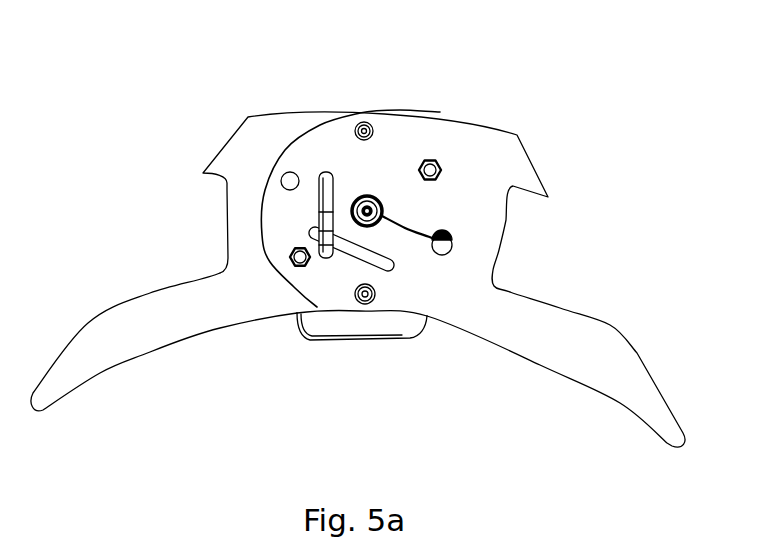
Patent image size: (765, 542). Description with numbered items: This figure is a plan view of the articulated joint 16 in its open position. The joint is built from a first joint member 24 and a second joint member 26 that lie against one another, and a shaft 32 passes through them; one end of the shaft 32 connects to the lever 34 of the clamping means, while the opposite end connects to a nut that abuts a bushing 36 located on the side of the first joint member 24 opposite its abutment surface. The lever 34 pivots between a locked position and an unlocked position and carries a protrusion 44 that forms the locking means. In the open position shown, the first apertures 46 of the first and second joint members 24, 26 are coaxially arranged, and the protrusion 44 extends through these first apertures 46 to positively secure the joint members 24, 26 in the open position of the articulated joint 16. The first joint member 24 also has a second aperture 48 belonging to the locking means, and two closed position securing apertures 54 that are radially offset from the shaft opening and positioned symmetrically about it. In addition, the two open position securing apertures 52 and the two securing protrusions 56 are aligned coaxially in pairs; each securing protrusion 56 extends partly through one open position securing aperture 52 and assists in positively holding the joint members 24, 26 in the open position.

The articulated joint 16 is at (142, 111).
The first joint member 24 is at (580, 337).
The second joint member 26 is at (188, 312).
The shaft 32 is at (366, 196).
The lever 34 is at (410, 338).
The bushing 36 is at (450, 236).
The protrusion 44 is at (322, 196).
The first aperture 46 is at (322, 173).
The second aperture 48 is at (345, 242).
The open position securing aperture 52 is at (358, 120).
The closed position securing aperture 54 is at (290, 170).
The securing protrusion 56 is at (368, 130).